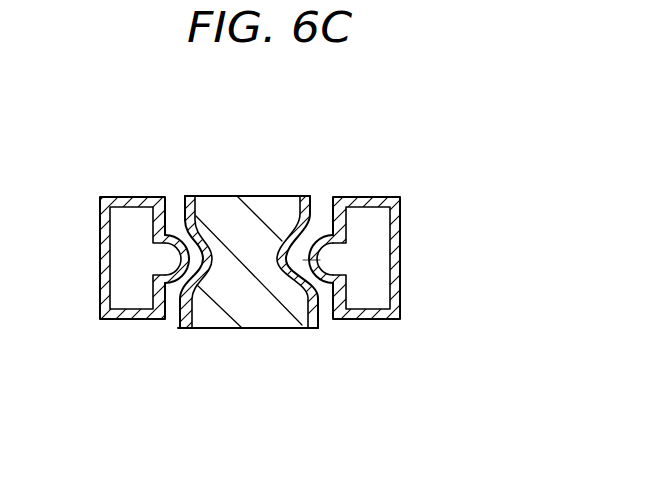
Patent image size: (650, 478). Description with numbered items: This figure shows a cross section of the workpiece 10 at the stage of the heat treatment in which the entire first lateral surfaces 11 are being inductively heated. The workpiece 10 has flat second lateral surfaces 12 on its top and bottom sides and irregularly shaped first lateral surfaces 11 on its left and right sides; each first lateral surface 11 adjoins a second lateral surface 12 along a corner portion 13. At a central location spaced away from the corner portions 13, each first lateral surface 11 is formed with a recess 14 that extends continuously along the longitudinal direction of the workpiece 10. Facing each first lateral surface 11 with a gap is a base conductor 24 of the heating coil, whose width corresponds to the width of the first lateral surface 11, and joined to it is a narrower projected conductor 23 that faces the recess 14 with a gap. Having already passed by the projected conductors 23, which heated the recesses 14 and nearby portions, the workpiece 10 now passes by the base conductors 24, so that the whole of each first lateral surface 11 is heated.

The workpiece 10 is at (337, 170).
The first lateral surface 11 is at (178, 328).
The second lateral surface 12 is at (248, 196).
The corner portion 13 is at (187, 198).
The recess 14 is at (303, 260).
The projected conductor 23 is at (172, 221).
The base conductor 24 is at (122, 197).